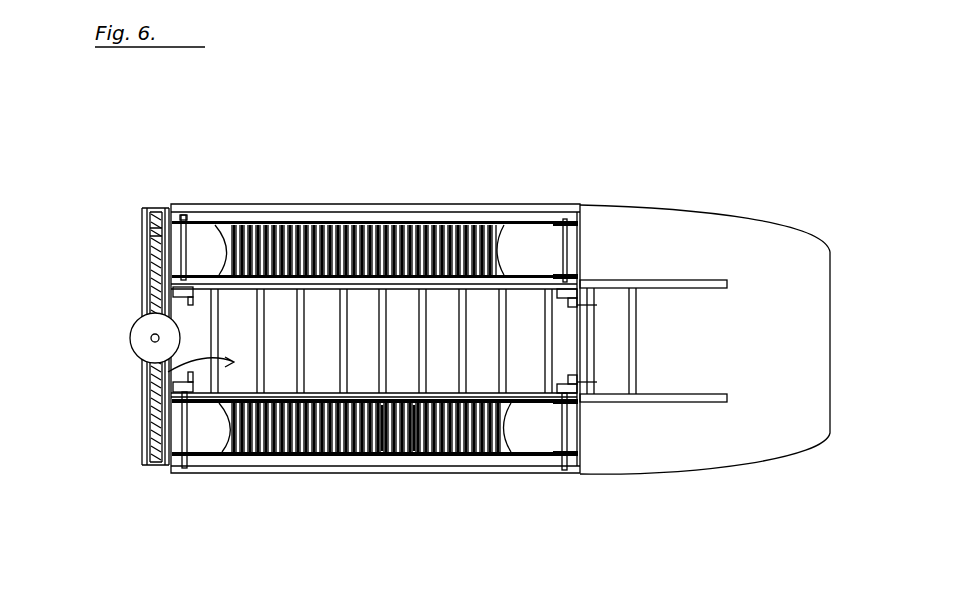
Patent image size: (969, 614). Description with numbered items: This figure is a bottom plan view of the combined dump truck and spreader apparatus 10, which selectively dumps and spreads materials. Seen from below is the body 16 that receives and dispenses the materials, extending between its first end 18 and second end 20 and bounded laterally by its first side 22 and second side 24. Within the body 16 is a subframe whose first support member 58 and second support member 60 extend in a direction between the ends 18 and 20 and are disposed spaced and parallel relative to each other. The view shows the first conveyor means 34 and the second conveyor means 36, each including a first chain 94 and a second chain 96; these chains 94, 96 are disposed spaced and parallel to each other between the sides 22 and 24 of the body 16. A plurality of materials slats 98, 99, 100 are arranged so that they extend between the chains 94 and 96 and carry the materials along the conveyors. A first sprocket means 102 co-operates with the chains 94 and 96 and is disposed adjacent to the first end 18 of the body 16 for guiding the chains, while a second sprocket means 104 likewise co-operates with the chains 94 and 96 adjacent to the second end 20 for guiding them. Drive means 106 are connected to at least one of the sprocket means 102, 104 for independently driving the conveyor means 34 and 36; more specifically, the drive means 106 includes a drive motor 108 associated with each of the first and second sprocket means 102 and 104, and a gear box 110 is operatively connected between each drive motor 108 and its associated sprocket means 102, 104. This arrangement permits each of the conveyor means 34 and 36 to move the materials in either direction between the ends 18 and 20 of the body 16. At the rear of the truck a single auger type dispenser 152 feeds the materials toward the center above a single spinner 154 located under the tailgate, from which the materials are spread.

The combined dump truck and spreader apparatus 10 is at (664, 152).
The body 16 is at (150, 363).
The first end 18 is at (168, 243).
The second end 20 is at (582, 268).
The first side 22 is at (293, 470).
The second side 24 is at (383, 209).
The first conveyor means 34 is at (485, 443).
The second conveyor means 36 is at (468, 242).
The first support member 58 is at (338, 456).
The second support member 60 is at (327, 284).
The first chain 94 is at (205, 221).
The second chain 96 is at (210, 273).
The materials slat 98 is at (378, 455).
The materials slat 99 is at (385, 418).
The materials slat 100 is at (418, 420).
The first sprocket means 102 is at (183, 435).
The second sprocket means 104 is at (567, 435).
The drive means 106 is at (580, 383).
The drive motor 108 is at (578, 300).
The gear box 110 is at (560, 385).
The auger type dispenser 152 is at (153, 232).
The spinner 154 is at (132, 330).